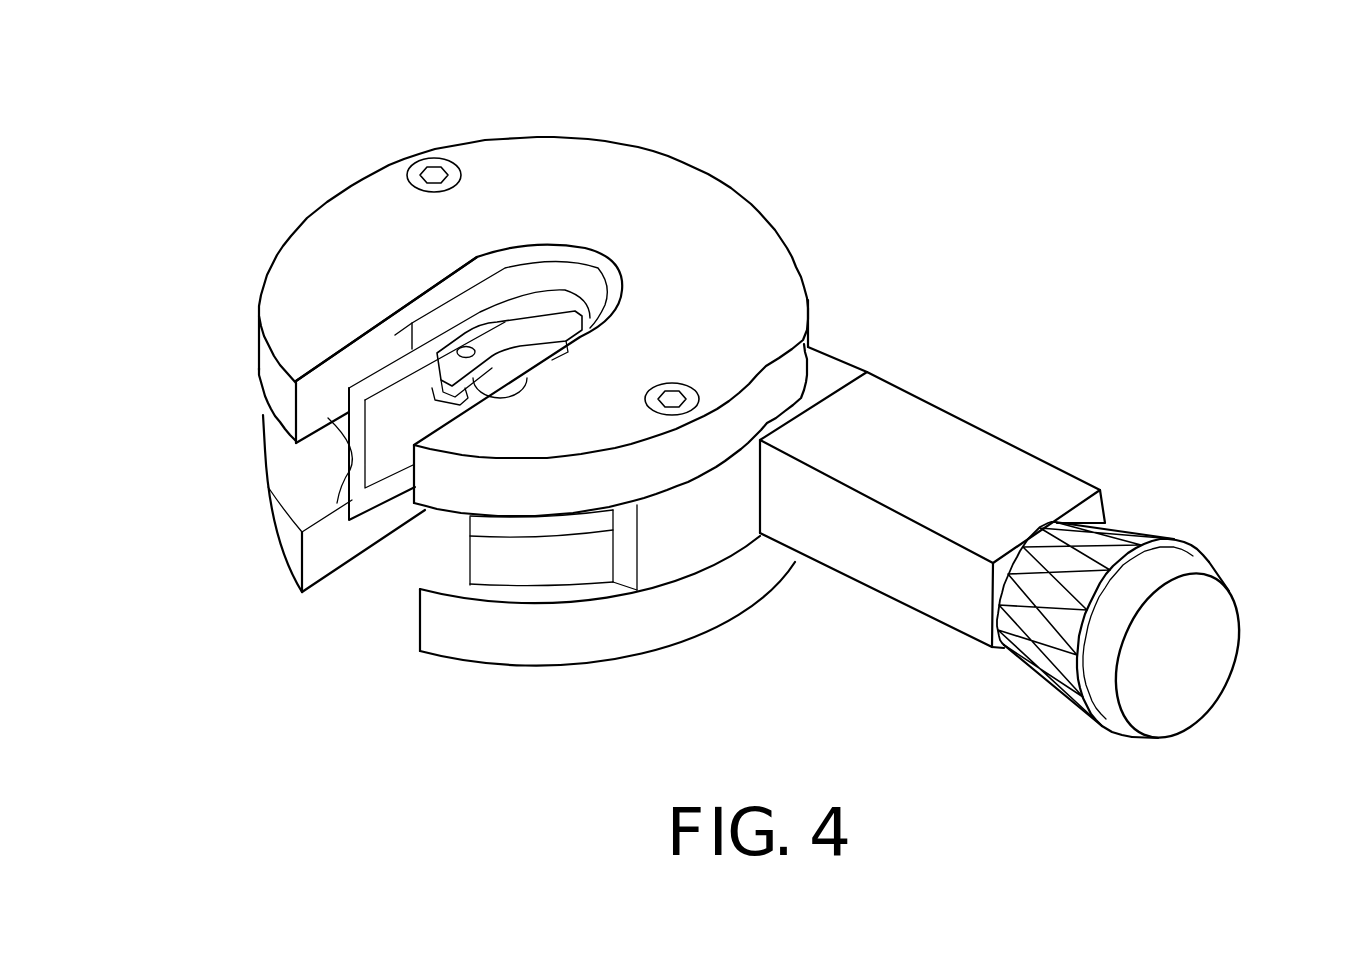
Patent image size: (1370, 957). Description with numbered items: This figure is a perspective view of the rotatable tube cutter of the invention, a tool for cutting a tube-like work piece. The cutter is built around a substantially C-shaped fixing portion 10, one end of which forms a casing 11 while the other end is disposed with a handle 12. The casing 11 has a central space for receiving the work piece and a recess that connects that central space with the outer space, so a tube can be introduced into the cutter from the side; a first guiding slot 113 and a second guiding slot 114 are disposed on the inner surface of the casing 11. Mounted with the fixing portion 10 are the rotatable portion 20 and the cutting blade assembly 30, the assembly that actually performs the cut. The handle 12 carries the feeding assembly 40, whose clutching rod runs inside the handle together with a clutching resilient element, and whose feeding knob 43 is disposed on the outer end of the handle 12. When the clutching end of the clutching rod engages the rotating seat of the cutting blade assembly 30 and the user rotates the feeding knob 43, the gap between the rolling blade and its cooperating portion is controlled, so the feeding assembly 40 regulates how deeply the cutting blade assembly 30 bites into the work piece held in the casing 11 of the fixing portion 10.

The fixing portion 10 is at (817, 249).
The casing 11 is at (658, 173).
The handle 12 is at (967, 435).
The rotatable portion 20 is at (392, 518).
The cutting blade assembly 30 is at (533, 312).
The feeding assembly 40 is at (1144, 517).
The feeding knob 43 is at (1187, 565).
The first guiding slot 113 is at (407, 337).
The second guiding slot 114 is at (364, 508).